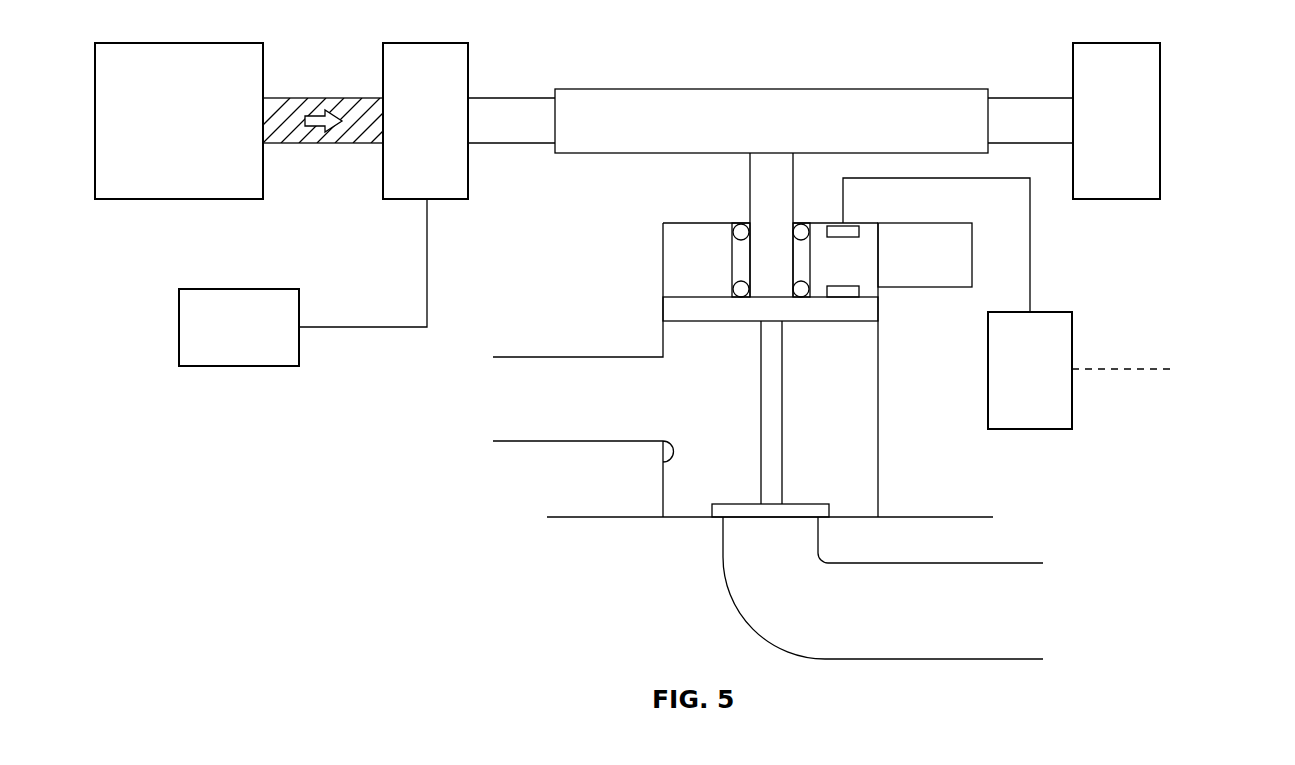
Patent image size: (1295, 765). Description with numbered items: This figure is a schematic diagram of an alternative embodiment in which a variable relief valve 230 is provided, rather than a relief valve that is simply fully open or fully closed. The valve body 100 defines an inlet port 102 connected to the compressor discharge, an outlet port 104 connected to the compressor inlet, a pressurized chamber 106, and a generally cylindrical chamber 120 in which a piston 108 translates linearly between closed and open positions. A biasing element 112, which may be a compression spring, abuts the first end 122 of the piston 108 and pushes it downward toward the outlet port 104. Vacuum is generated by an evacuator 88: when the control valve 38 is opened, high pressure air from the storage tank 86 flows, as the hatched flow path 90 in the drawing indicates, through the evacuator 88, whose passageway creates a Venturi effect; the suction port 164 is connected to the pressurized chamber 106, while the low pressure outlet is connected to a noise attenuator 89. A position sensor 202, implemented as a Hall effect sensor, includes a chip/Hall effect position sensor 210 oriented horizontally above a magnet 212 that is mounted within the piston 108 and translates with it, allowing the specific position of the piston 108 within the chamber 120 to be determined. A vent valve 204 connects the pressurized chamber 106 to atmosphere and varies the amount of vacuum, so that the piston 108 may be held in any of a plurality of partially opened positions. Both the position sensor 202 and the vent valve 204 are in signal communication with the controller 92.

The storage tank 86 is at (243, 43).
The pressurized air flow passage 90 is at (322, 98).
The control valve 38 is at (448, 43).
The controller 92 is at (268, 289).
The evacuator 88 is at (963, 89).
The noise attenuator 89 is at (1133, 43).
The suction port 164 is at (766, 197).
The pressurized chamber 106 is at (676, 245).
The biasing element 112 is at (741, 250).
The first end 122 is at (670, 291).
The piston 108 is at (819, 313).
The position sensor 202 is at (958, 215).
The chip/Hall effect position sensor 210 is at (856, 226).
The magnet 212 is at (853, 290).
The vent valve 204 is at (1053, 312).
The variable relief valve 230 is at (894, 378).
The chamber 120 is at (856, 429).
The valve body 100 is at (879, 470).
The inlet port 102 is at (662, 461).
The outlet port 104 is at (818, 516).